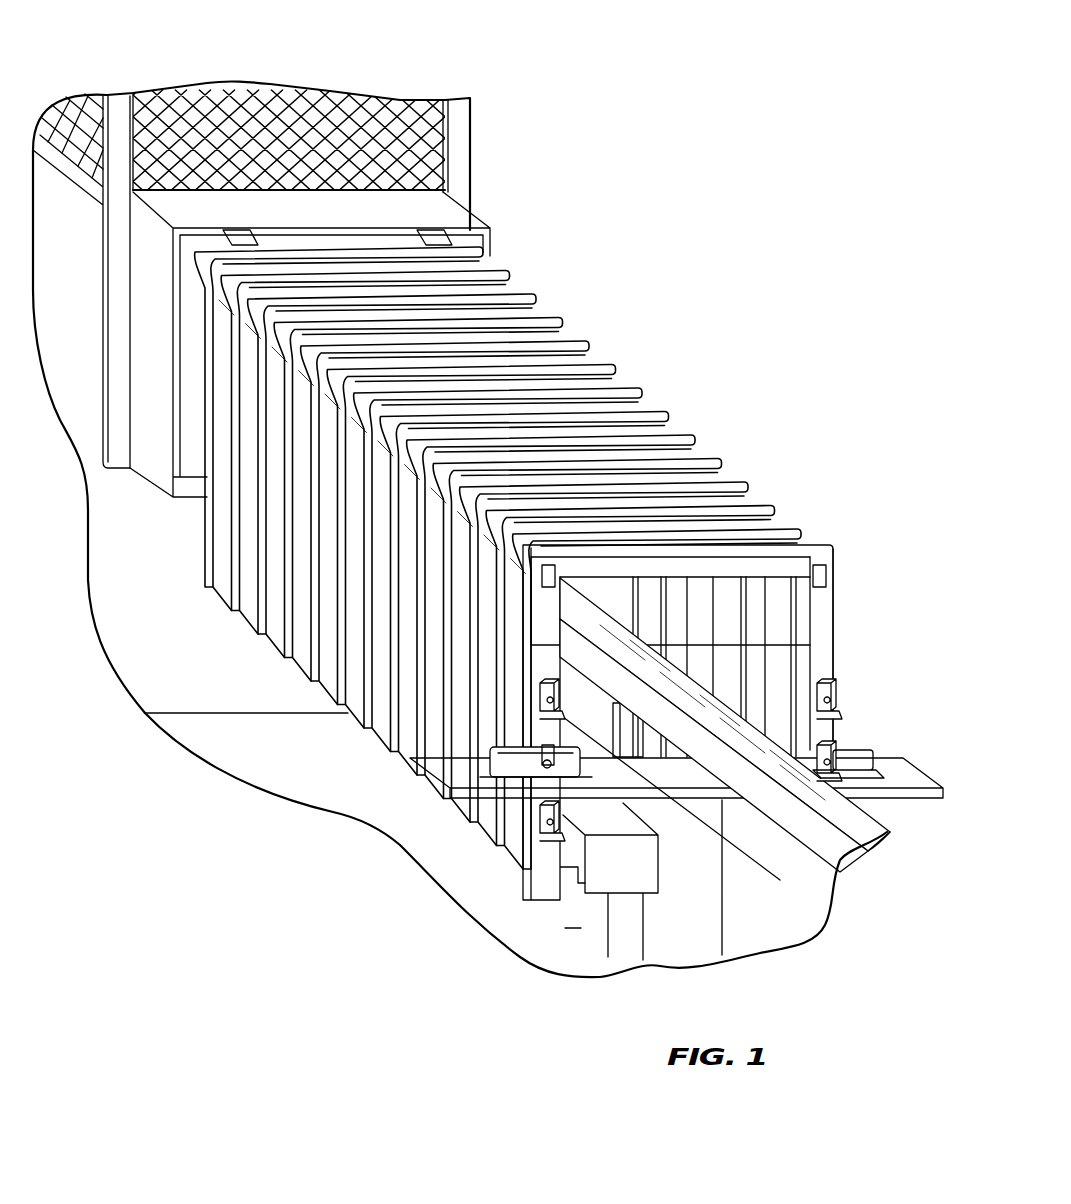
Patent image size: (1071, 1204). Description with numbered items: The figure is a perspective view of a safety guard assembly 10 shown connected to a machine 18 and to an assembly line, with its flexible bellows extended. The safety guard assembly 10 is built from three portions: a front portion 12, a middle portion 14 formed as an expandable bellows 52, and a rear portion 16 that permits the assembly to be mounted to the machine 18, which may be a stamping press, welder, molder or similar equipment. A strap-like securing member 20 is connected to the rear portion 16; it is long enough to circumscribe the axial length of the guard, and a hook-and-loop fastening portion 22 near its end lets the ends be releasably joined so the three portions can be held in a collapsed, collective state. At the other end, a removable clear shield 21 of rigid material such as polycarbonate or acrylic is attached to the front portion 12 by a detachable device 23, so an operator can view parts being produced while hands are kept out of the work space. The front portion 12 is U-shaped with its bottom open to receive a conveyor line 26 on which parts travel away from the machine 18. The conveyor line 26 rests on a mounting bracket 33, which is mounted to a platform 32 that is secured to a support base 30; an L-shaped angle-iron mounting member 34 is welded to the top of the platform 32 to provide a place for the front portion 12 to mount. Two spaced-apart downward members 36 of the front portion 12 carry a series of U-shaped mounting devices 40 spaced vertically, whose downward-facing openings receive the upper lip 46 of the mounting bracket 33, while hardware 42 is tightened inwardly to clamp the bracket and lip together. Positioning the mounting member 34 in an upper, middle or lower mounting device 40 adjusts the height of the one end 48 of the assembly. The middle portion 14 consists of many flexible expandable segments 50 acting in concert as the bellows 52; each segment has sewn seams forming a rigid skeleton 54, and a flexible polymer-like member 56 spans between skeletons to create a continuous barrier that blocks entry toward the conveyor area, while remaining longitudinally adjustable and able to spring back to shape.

The safety guard assembly 10 is at (478, 537).
The front portion 12 is at (732, 651).
The middle portion 14 is at (510, 558).
The rear portion 16 is at (340, 265).
The machine 18 is at (422, 75).
The securing member 20 is at (238, 230).
The fastening portion 22 is at (432, 230).
The shield 21 is at (838, 630).
The detachable device 23 is at (828, 578).
The conveyor line 26 is at (693, 708).
The support base 30 is at (668, 917).
The platform 32 is at (897, 768).
The mounting bracket 33 is at (630, 758).
The mounting member 34 is at (535, 772).
The downward members 36 is at (822, 613).
The mounting devices 40 is at (545, 690).
The hardware 42 is at (545, 748).
The upper lip 46 is at (858, 748).
The one end 48 is at (620, 994).
The expandable segments 50 is at (672, 417).
The bellows 52 is at (537, 301).
The rigid skeleton 54 is at (697, 453).
The flexible member 56 is at (749, 495).